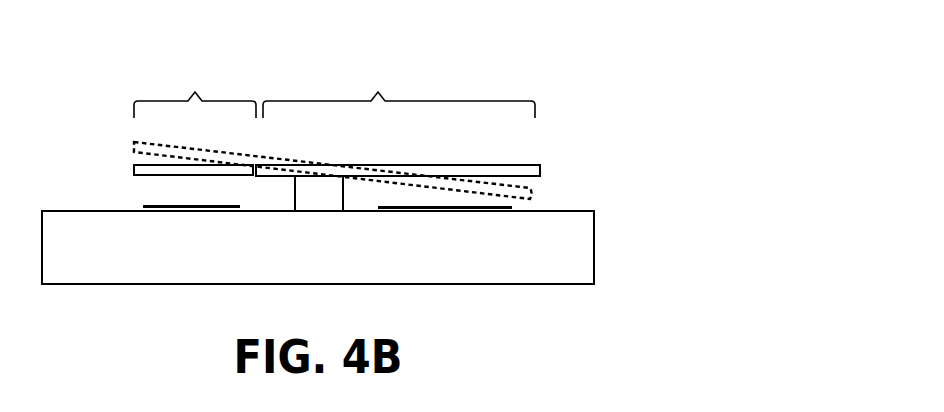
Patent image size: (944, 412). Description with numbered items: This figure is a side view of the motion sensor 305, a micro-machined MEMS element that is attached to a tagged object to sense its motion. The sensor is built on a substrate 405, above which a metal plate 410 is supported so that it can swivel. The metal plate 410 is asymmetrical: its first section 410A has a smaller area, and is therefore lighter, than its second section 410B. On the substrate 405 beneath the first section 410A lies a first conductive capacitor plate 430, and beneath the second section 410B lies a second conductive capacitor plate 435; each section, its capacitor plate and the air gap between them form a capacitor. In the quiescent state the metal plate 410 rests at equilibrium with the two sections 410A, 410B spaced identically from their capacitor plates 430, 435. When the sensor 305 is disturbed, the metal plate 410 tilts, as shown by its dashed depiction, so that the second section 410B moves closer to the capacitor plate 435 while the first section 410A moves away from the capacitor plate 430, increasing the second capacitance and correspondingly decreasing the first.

The motion sensor 305 is at (682, 255).
The substrate 405 is at (535, 242).
The metal plate 410 is at (541, 172).
The first section 410A is at (195, 90).
The second section 410B is at (399, 90).
The first conductive capacitor plate 430 is at (152, 205).
The second conductive capacitor plate 435 is at (428, 207).